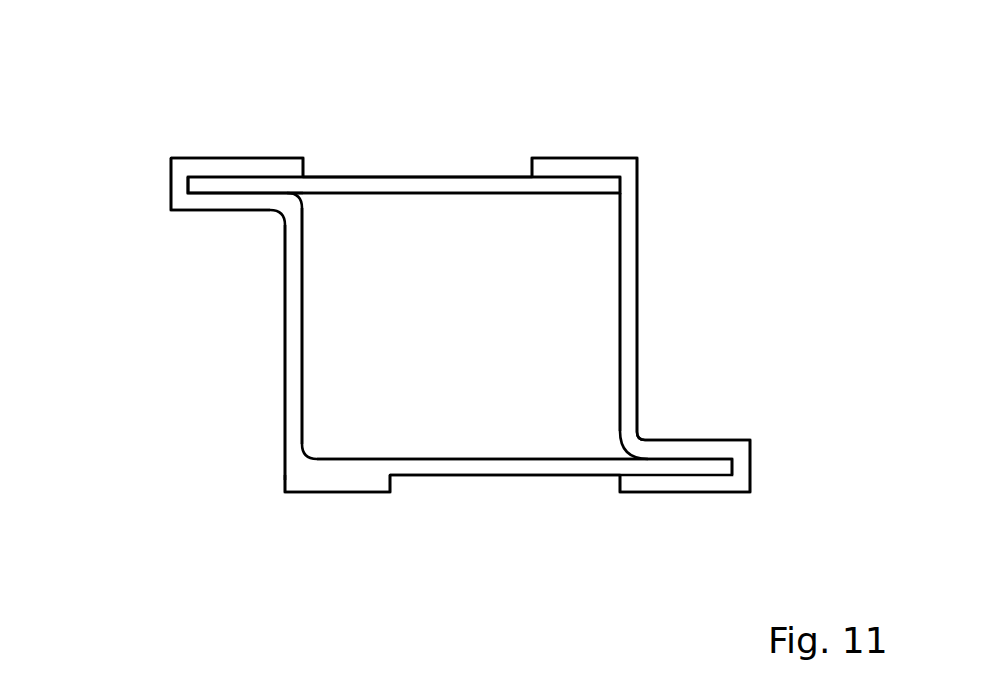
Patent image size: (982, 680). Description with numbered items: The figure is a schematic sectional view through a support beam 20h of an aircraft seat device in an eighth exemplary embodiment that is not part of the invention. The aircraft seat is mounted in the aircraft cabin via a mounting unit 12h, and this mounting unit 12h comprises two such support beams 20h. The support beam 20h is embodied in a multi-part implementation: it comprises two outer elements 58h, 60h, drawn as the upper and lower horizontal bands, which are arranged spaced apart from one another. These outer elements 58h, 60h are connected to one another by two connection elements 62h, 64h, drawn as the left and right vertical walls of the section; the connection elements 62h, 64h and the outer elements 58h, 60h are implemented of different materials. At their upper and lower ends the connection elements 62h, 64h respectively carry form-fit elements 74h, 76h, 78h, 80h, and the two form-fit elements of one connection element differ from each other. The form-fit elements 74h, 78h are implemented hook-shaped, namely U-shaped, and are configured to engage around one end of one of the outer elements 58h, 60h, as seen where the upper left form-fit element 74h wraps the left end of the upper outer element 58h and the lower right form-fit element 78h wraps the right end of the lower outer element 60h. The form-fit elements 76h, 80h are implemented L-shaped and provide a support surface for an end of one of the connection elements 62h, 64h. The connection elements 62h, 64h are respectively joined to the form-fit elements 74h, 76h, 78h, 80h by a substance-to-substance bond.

The support beam 20h is at (183, 137).
The mounting unit 12h is at (343, 143).
The outer element 58h is at (427, 176).
The outer element 60h is at (510, 477).
The connection element 62h is at (286, 333).
The connection element 64h is at (627, 311).
The form-fit element 74h is at (188, 187).
The form-fit element 76h is at (617, 157).
The form-fit element 78h is at (707, 497).
The form-fit element 80h is at (307, 497).